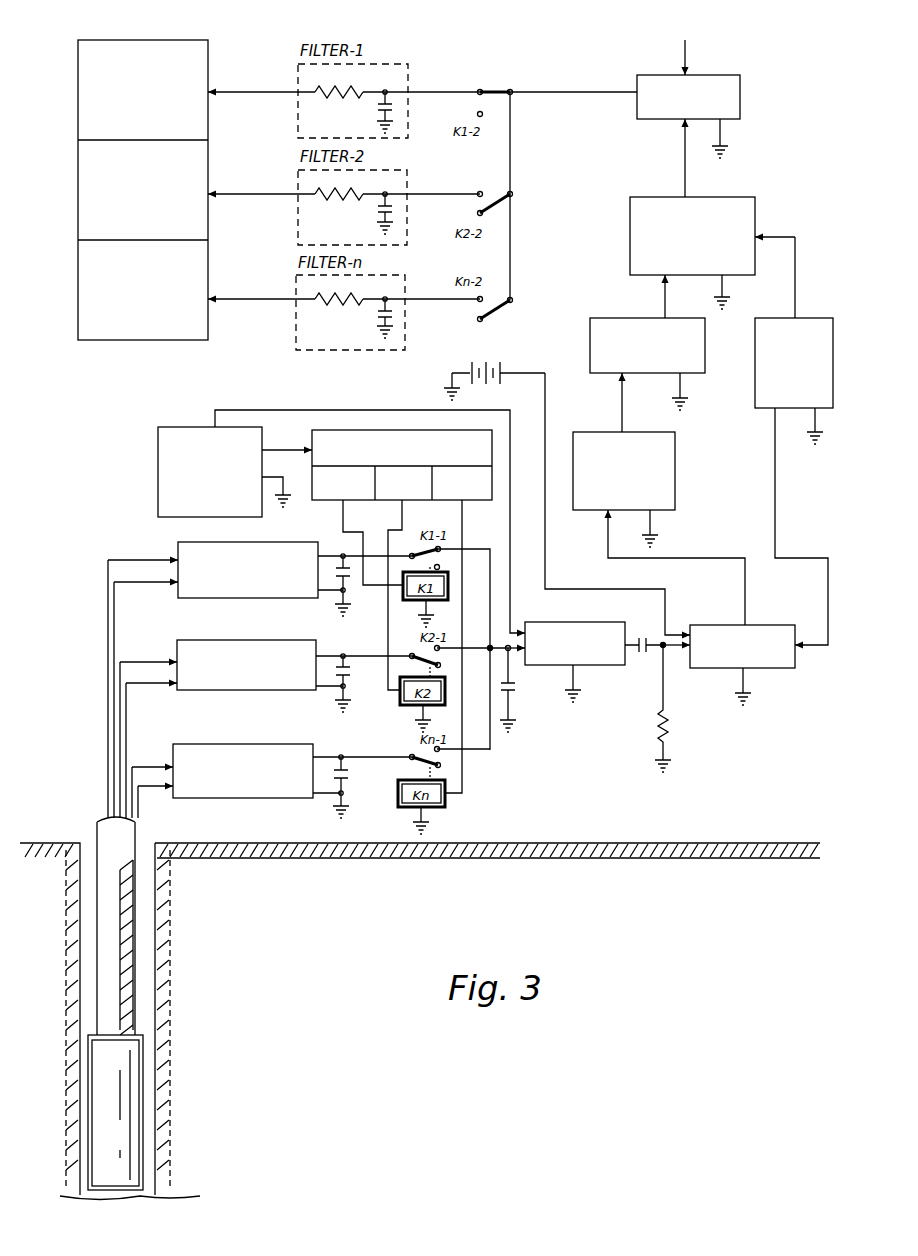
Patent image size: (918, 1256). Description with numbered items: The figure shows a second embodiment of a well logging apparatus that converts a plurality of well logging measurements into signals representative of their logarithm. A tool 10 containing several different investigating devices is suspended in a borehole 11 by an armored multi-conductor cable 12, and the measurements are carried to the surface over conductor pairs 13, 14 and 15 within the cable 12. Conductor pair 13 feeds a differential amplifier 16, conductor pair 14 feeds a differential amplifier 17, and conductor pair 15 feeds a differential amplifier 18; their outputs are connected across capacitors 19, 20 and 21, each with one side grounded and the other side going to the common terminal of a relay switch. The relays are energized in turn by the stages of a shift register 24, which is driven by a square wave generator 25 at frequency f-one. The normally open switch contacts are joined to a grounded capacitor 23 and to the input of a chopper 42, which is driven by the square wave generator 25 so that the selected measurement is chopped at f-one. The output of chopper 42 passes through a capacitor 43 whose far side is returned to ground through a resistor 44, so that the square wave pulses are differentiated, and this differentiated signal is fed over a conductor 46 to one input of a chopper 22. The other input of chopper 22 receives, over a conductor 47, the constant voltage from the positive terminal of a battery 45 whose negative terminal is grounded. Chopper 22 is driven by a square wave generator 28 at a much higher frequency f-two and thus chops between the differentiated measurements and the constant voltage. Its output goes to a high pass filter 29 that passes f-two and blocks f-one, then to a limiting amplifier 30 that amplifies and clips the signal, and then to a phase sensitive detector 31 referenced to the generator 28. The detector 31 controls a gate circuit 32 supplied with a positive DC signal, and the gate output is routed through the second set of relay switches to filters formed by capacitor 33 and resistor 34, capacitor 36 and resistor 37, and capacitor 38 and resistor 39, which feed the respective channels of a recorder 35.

The tool 10 is at (118, 1078).
The borehole 11 is at (156, 972).
The armored multi-conductor cable 12 is at (112, 946).
The conductor pair 13 is at (137, 548).
The conductor pair 14 is at (140, 655).
The conductor pair 15 is at (150, 760).
The differential amplifier 16 is at (285, 542).
The differential amplifier 17 is at (287, 640).
The differential amplifier 18 is at (281, 744).
The capacitor 19 is at (357, 586).
The capacitor 20 is at (357, 683).
The capacitor 21 is at (357, 781).
The chopper 22 is at (765, 625).
The capacitor 23 is at (522, 692).
The shift register 24 is at (402, 430).
The square wave generator 25 is at (158, 460).
The square wave generator 28 is at (820, 318).
The high pass filter 29 is at (675, 476).
The limiting amplifier 30 is at (624, 318).
The phase sensitive detector 31 is at (743, 197).
The gate circuit 32 is at (650, 75).
The capacitor 33 is at (372, 106).
The resistor 34 is at (322, 80).
The recorder 35 is at (78, 126).
The capacitor 36 is at (372, 210).
The resistor 37 is at (322, 184).
The capacitor 38 is at (372, 315).
The resistor 39 is at (322, 290).
The chopper 42 is at (602, 667).
The capacitor 43 is at (642, 636).
The resistor 44 is at (672, 730).
The battery 45 is at (486, 382).
The conductor 46 is at (678, 652).
The conductor 47 is at (580, 588).